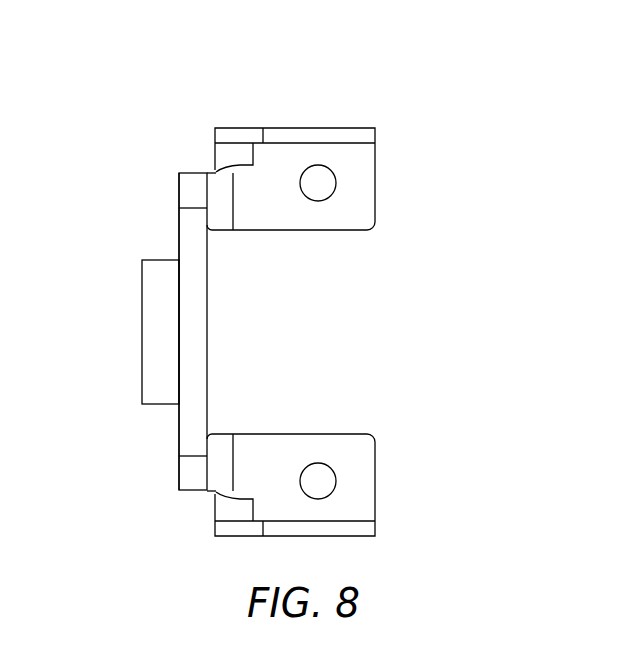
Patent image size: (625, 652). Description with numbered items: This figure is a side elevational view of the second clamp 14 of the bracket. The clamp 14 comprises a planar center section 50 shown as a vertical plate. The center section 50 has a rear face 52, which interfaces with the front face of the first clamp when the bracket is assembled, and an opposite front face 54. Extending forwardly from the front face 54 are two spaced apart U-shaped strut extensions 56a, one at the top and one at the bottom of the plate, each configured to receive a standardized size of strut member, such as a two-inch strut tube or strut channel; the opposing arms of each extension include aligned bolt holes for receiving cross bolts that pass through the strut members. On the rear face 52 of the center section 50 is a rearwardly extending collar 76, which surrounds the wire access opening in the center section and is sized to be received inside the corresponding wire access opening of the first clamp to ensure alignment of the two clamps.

The second clamp 14 is at (282, 297).
The center section 50 is at (115, 354).
The rear face 52 is at (129, 320).
The front face 54 is at (272, 332).
The U-shaped strut extension 56a is at (362, 338).
The collar 76 is at (113, 362).